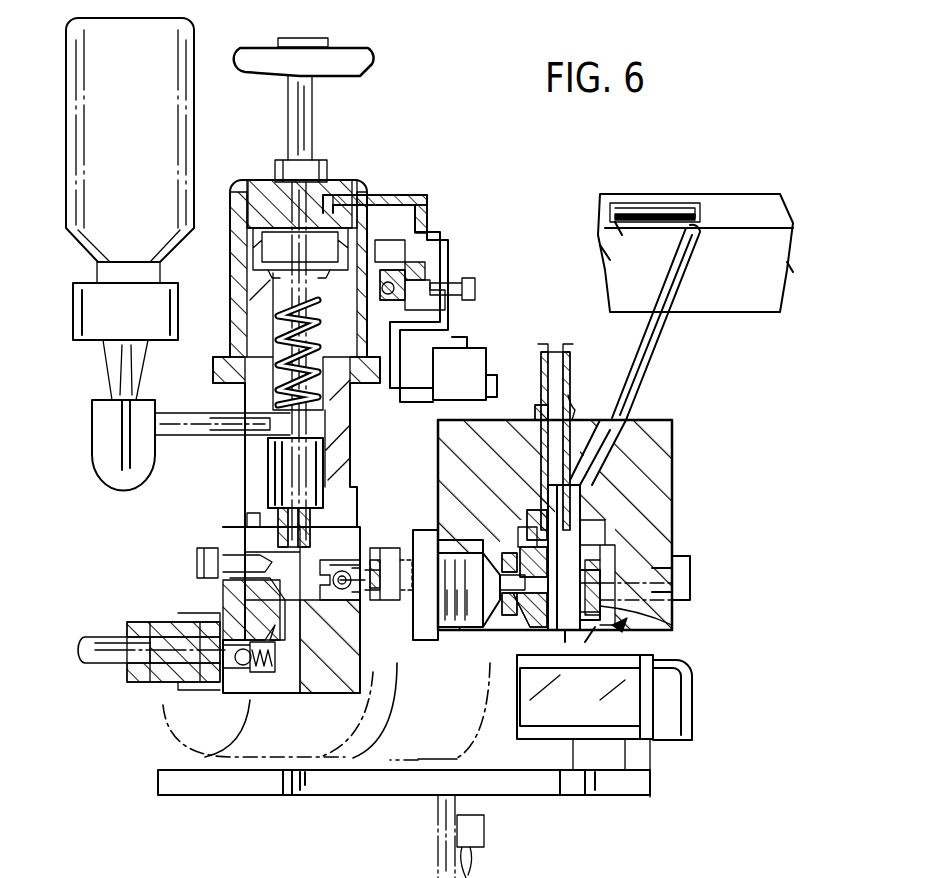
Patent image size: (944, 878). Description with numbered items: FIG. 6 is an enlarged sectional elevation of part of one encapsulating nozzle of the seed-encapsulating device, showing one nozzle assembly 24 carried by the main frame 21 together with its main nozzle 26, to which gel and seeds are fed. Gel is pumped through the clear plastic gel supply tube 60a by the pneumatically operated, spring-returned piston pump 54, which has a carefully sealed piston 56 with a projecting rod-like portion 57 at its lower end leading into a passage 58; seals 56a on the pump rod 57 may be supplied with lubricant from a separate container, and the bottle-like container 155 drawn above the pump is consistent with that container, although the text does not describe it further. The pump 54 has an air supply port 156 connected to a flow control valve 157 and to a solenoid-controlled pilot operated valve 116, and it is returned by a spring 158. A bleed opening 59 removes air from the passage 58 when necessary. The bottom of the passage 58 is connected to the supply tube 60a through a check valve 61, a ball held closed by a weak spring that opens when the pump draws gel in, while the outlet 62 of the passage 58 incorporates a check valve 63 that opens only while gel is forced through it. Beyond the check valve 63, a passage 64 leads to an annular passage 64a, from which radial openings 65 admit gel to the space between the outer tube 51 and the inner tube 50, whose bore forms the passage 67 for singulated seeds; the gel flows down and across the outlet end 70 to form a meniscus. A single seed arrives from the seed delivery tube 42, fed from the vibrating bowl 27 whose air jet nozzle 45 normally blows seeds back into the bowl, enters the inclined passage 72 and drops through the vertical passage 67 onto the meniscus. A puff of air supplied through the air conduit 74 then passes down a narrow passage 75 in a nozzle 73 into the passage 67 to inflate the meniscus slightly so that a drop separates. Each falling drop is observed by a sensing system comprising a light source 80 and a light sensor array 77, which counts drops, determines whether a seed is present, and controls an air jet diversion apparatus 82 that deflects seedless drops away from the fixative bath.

The bottle 155 is at (138, 141).
The piston pump 54 is at (352, 186).
The piston 56 is at (300, 262).
The seals 56a is at (283, 470).
The air supply port 156 is at (362, 215).
The flow control valve 157 is at (440, 252).
The spring 158 is at (283, 312).
The solenoid-controlled pilot operated valve 116 is at (462, 348).
The rod-like portion 57 is at (278, 530).
The passage 58 is at (265, 592).
The bleed opening 59 is at (224, 556).
The gel supply tube 60a is at (116, 632).
The check valve 61 is at (240, 675).
The outlet 62 is at (291, 610).
The check valve 63 is at (348, 560).
The passage 64 is at (495, 585).
The annular passage 64a is at (670, 616).
The radial openings 65 is at (505, 620).
The seed passage 67 is at (545, 627).
The outlet end 70 is at (560, 632).
The inner tube 50 is at (595, 548).
The outer tube 51 is at (580, 560).
The inclined passage 72 is at (605, 462).
The nozzle 73 is at (575, 405).
The air conduit 74 is at (550, 345).
The narrow passage 75 is at (540, 412).
The nozzle assembly 24 is at (672, 474).
The main nozzle 26 is at (630, 628).
The vibrating bowl 27 is at (725, 194).
The delivery tube 42 is at (663, 334).
The air jet nozzle 45 is at (658, 205).
The light sensor array 77 is at (265, 768).
The light source 80 is at (590, 715).
The main frame 21 is at (438, 825).
The air jet diversion apparatus 82 is at (483, 838).